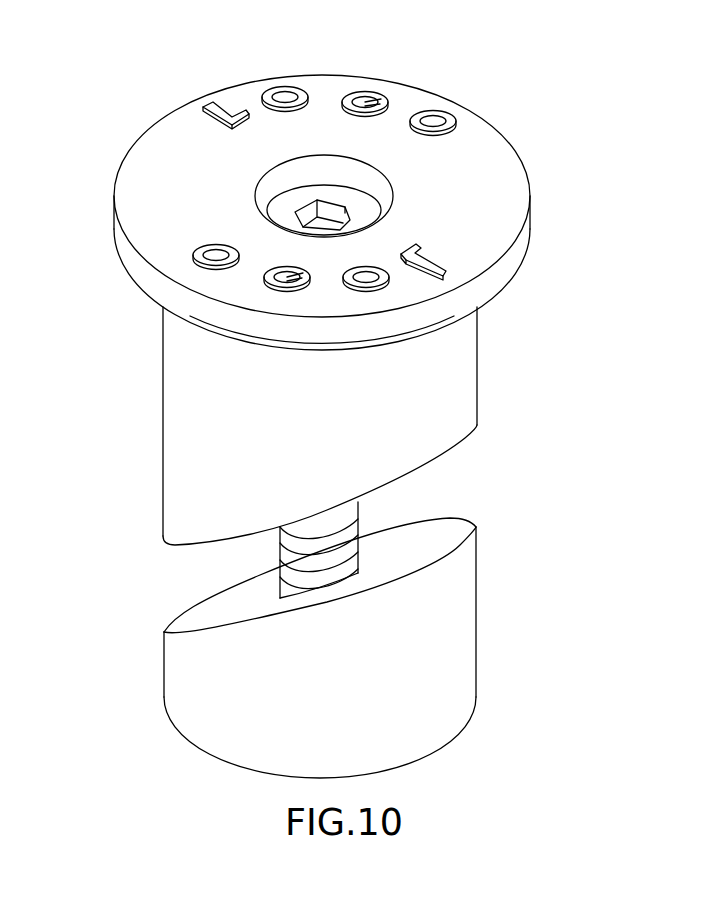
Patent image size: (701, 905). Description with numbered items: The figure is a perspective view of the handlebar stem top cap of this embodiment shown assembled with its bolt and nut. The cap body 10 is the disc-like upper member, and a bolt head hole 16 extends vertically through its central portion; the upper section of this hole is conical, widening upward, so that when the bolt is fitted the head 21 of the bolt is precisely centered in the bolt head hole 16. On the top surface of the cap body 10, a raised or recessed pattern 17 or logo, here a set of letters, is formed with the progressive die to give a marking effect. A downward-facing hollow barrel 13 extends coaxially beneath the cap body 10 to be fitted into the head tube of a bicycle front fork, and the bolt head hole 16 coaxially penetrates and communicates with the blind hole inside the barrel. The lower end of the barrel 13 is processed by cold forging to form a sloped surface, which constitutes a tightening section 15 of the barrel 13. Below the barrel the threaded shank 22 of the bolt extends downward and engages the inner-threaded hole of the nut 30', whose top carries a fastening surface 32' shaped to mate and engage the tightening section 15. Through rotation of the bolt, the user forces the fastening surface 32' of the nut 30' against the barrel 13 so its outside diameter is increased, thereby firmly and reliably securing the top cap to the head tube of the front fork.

The cap body 10 is at (497, 220).
The barrel 13 is at (472, 362).
The tightening section 15 is at (458, 457).
The bolt head hole 16 is at (389, 197).
The pattern 17 is at (455, 120).
The head 21 is at (284, 205).
The threaded shank 22 is at (357, 522).
The nut 30' is at (360, 652).
The fastening surface 32' is at (288, 575).